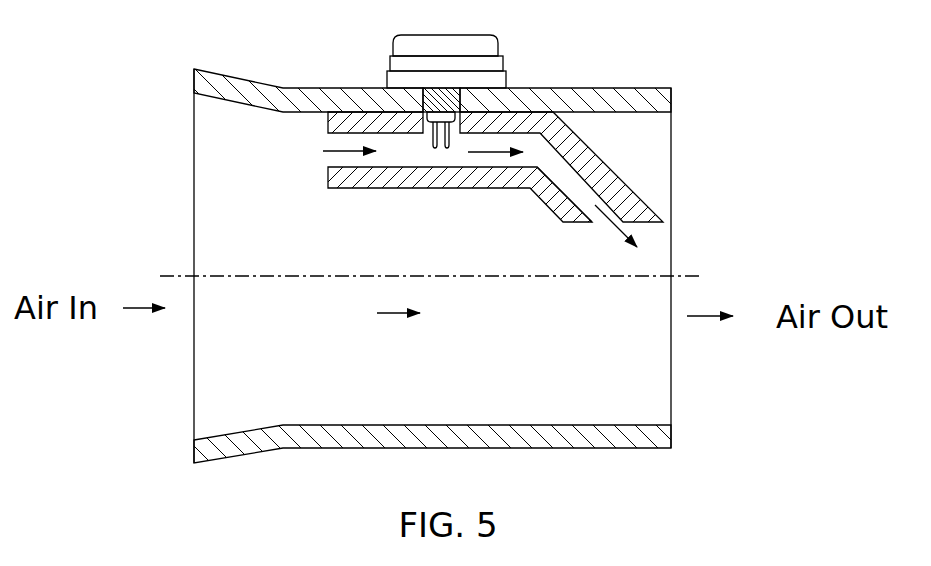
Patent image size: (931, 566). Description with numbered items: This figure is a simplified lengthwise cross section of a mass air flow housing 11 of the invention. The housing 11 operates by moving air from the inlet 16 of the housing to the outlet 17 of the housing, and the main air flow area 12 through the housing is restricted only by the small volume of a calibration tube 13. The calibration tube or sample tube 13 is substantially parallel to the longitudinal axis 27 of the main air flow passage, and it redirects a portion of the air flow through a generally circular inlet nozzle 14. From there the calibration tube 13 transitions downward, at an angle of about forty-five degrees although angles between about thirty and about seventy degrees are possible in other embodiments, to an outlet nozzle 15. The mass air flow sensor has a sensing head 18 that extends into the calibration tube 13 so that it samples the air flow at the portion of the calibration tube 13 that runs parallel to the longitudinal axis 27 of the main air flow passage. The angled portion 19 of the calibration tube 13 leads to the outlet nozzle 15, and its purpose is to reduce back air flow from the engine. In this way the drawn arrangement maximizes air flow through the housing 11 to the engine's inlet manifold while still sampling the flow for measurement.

The mass air flow housing 11 is at (633, 50).
The air flow area 12 is at (439, 313).
The calibration tube 13 is at (345, 189).
The inlet nozzle 14 is at (328, 124).
The outlet nozzle 15 is at (648, 222).
The inlet 16 is at (193, 368).
The outlet 17 is at (671, 95).
The sensing head 18 is at (434, 149).
The angled portion 19 is at (550, 206).
The longitudinal axis 27 is at (172, 272).